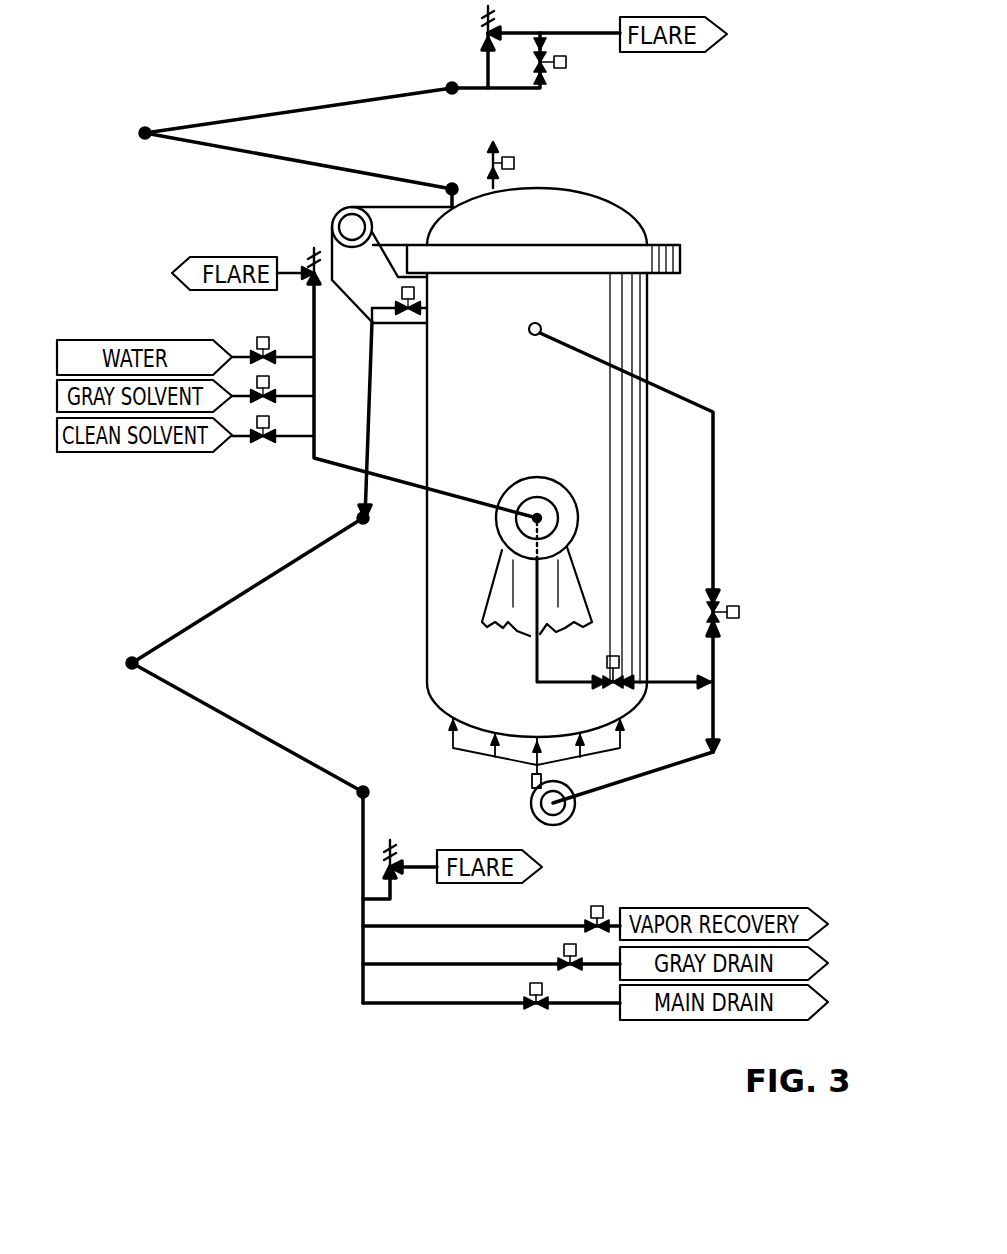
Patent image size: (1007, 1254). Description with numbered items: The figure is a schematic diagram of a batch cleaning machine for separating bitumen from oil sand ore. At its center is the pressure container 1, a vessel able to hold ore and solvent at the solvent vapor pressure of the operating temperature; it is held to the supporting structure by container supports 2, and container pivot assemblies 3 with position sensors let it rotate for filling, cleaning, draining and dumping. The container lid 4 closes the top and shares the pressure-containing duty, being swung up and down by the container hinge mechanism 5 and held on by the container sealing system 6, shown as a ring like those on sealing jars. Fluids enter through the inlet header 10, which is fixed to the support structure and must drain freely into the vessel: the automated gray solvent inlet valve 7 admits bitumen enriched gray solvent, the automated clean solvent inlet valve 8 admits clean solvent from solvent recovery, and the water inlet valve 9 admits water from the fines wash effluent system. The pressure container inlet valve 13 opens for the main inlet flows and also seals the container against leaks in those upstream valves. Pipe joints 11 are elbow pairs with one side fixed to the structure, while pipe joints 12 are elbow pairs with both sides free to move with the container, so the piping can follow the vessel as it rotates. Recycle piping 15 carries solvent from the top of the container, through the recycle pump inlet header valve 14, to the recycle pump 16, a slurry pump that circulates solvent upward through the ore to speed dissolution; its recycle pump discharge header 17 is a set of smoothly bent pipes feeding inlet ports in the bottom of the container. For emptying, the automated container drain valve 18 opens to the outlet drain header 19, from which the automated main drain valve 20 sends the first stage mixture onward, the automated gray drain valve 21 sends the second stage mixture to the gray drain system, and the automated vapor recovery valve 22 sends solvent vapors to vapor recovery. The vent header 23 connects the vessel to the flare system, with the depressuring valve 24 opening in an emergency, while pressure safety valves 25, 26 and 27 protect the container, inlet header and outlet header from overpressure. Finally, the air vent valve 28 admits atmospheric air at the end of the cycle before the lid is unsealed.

The pressure container 1 is at (650, 340).
The container supports 2 is at (490, 605).
The container pivot assemblies 3 is at (496, 528).
The container lid 4 is at (598, 200).
The container hinge mechanism 5 is at (333, 218).
The container sealing system 6 is at (682, 262).
The automated gray solvent inlet valve 7 is at (272, 384).
The automated clean solvent inlet valve 8 is at (272, 423).
The water inlet valve 9 is at (272, 345).
The inlet header 10 is at (338, 466).
The pipe joints 11 is at (452, 86).
The pipe joints 12 is at (145, 130).
The pressure container inlet valve 13 is at (624, 662).
The recycle pump inlet header valve 14 is at (740, 616).
The recycle piping 15 is at (716, 475).
The recycle pump 16 is at (532, 812).
The recycle pump discharge header 17 is at (478, 756).
The automated container drain valve 18 is at (400, 296).
The outlet drain header 19 is at (267, 578).
The automated main drain valve 20 is at (530, 990).
The automated gray drain valve 21 is at (563, 952).
The automated vapor recovery valve 22 is at (590, 912).
The vent header 23 is at (318, 105).
The depressuring valve 24 is at (566, 66).
The pressure safety valve 25 is at (485, 17).
The pressure safety valve 26 is at (309, 250).
The pressure safety valve 27 is at (396, 848).
The air vent valve 28 is at (514, 160).